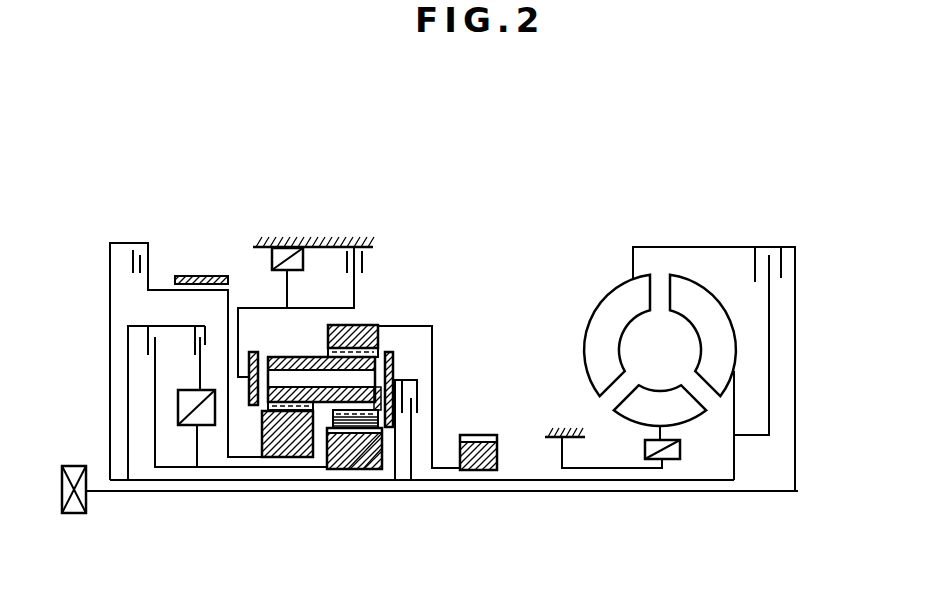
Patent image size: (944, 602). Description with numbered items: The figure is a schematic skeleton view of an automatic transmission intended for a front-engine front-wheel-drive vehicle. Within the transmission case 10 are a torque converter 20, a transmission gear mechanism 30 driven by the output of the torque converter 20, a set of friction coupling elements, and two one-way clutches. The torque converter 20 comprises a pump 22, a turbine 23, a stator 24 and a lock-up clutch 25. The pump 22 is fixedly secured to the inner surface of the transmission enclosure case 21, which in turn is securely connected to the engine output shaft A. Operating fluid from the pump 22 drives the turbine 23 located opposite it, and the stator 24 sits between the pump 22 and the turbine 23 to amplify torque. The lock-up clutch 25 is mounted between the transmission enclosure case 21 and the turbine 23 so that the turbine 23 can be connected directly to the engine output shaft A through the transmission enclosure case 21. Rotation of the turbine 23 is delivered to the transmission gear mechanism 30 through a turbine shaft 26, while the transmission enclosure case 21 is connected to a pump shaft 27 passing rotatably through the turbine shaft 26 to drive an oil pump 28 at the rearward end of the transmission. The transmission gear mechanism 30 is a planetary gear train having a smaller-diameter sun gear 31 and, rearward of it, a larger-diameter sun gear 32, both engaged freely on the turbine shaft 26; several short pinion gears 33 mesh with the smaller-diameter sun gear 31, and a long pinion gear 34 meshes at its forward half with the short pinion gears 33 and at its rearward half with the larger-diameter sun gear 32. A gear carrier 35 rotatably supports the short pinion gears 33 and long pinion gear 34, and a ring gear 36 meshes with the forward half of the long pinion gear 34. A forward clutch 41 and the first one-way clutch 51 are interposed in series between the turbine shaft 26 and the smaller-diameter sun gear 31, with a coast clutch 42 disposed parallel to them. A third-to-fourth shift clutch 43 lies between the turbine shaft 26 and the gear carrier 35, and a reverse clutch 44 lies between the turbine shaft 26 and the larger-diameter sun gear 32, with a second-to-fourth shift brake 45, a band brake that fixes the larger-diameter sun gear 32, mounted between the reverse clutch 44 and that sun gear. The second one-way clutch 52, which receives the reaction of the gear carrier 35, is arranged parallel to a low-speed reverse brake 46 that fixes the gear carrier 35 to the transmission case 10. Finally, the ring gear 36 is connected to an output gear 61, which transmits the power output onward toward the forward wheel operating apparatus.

The transmission case 10 is at (338, 244).
The torque converter 20 is at (640, 353).
The transmission enclosure case 21 is at (692, 247).
The pump 22 is at (590, 330).
The turbine 23 is at (712, 305).
The stator 24 is at (656, 390).
The lock-up clutch 25 is at (781, 278).
The turbine shaft 26 is at (520, 480).
The pump shaft 27 is at (161, 491).
The oil pump 28 is at (74, 513).
The transmission gear mechanism 30 is at (443, 350).
The smaller-diameter sun gear 31 is at (343, 463).
The larger-diameter sun gear 32 is at (285, 445).
The short pinion gears 33 is at (372, 463).
The long pinion gear 34 is at (312, 364).
The gear carrier 35 is at (391, 352).
The ring gear 36 is at (366, 326).
The forward clutch 41 is at (204, 340).
The coast clutch 42 is at (160, 337).
The 3-4 shift clutch 43 is at (407, 378).
The reverse clutch 44 is at (149, 258).
The 2-4 shift brake 45 is at (203, 276).
The low-speed reverse brake 46 is at (362, 262).
The first one-way clutch 51 is at (180, 420).
The second one-way clutch 52 is at (303, 262).
The output gear 61 is at (471, 440).
The engine output shaft A is at (813, 491).